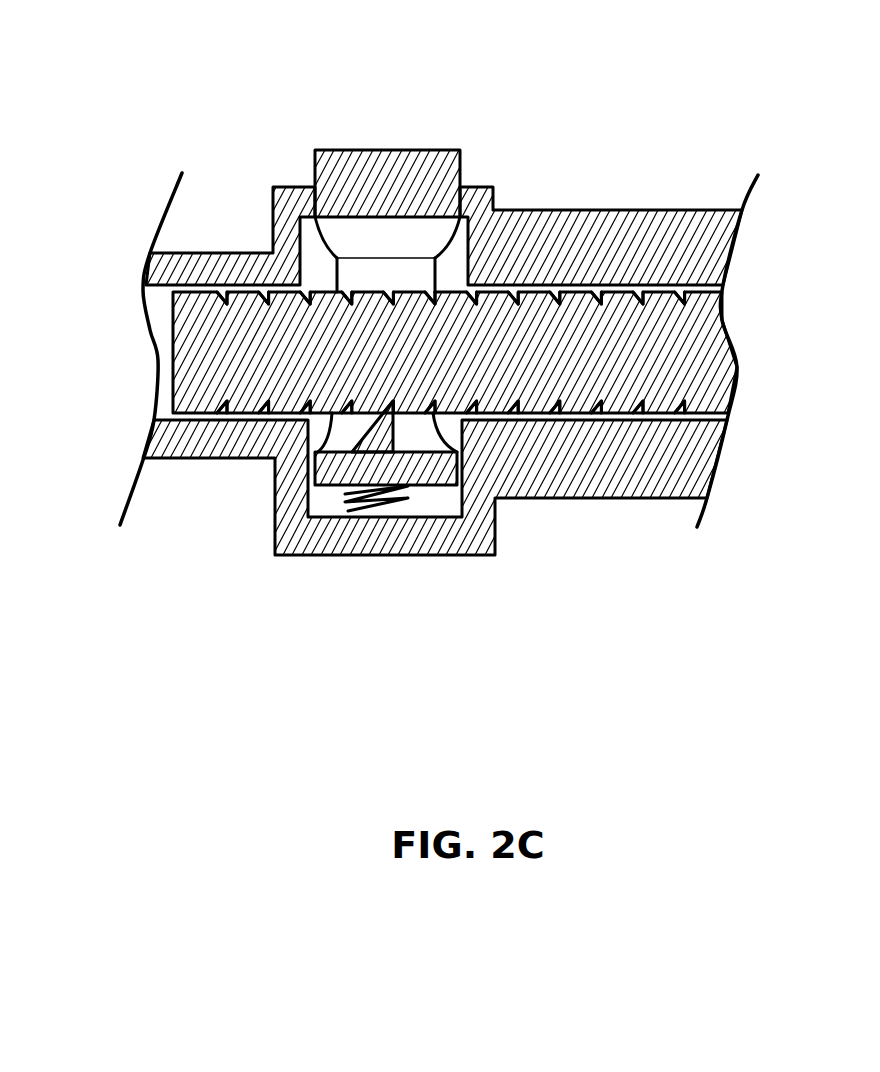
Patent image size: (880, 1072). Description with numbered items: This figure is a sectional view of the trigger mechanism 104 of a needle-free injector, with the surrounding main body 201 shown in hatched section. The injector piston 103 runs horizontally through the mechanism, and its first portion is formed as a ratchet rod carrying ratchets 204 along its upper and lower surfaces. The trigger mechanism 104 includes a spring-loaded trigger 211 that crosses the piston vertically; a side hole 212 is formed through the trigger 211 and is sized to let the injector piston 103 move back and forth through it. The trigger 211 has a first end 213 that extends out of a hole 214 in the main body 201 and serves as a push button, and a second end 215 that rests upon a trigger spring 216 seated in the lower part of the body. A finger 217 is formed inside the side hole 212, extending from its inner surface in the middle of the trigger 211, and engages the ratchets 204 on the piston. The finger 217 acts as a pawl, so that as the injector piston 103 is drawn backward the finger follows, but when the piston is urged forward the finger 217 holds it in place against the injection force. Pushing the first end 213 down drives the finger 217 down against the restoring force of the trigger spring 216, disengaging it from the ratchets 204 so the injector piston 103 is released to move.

The trigger mechanism 104 is at (273, 135).
The first end 213 is at (399, 147).
The hole 214 is at (469, 184).
The side hole 212 is at (436, 254).
The injector piston 103 is at (613, 332).
The main body 201 is at (708, 210).
The ratchets 204 is at (523, 393).
The spring-loaded trigger 211 is at (322, 478).
The trigger spring 216 is at (343, 495).
The finger 217 is at (395, 434).
The second end 215 is at (440, 487).